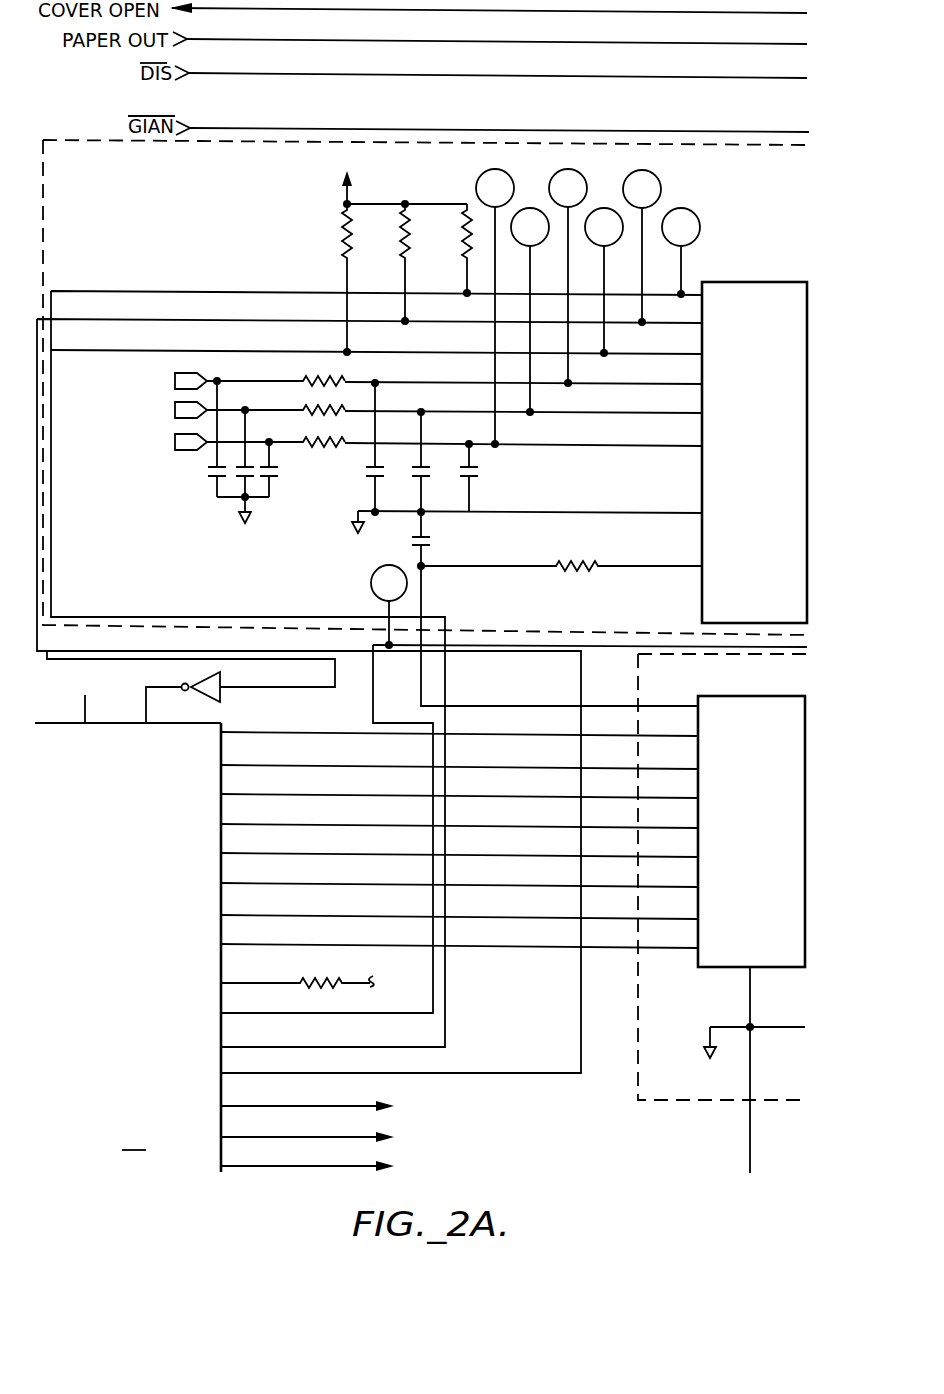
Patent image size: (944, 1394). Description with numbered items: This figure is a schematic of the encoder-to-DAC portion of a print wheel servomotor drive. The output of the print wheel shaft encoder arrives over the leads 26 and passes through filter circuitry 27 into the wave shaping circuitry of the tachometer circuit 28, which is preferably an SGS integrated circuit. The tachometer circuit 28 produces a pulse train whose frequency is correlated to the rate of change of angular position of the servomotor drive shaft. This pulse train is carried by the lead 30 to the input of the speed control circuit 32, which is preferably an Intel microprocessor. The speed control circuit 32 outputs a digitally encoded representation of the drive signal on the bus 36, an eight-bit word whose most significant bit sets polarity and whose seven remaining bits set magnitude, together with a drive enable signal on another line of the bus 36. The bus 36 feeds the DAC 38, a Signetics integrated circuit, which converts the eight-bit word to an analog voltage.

The leads 26 is at (225, 452).
The filter circuitry 27 is at (256, 576).
The tachometer circuit 28 is at (778, 187).
The lead 30 is at (258, 314).
The speed control circuit 32 is at (111, 853).
The bus 36 is at (534, 1092).
The DAC 38 is at (800, 691).